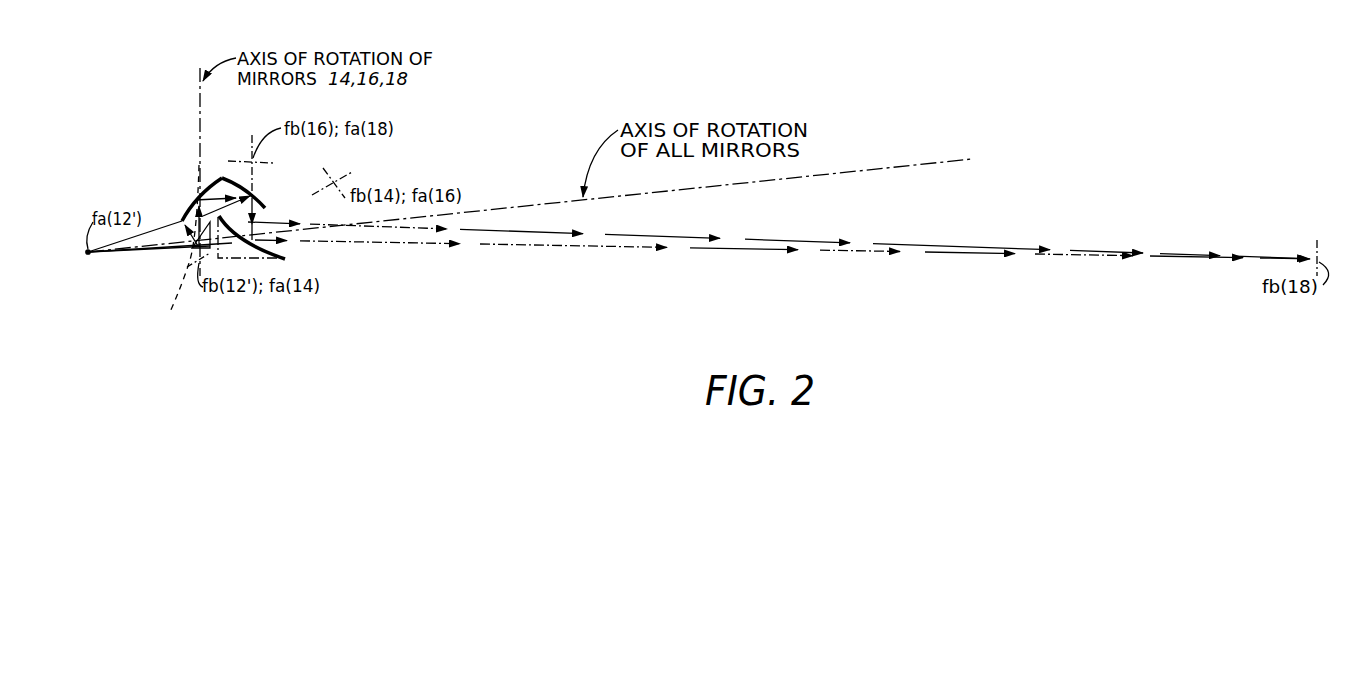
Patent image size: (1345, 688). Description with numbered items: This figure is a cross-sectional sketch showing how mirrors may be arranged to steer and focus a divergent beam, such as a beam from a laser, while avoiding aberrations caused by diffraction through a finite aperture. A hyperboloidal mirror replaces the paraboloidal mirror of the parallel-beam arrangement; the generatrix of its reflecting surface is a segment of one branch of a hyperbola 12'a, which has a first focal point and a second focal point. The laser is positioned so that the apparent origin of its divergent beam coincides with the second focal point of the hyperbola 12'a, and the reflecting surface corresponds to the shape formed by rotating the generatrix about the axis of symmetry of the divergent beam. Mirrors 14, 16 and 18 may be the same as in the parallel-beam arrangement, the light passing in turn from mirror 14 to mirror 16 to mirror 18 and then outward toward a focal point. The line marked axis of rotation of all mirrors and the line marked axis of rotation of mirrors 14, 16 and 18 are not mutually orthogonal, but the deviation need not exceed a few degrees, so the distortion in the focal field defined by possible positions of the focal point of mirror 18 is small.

The mirror 14 is at (200, 203).
The mirror 16 is at (251, 196).
The mirror 18 is at (268, 249).
The hyperbola 12'a is at (263, 246).